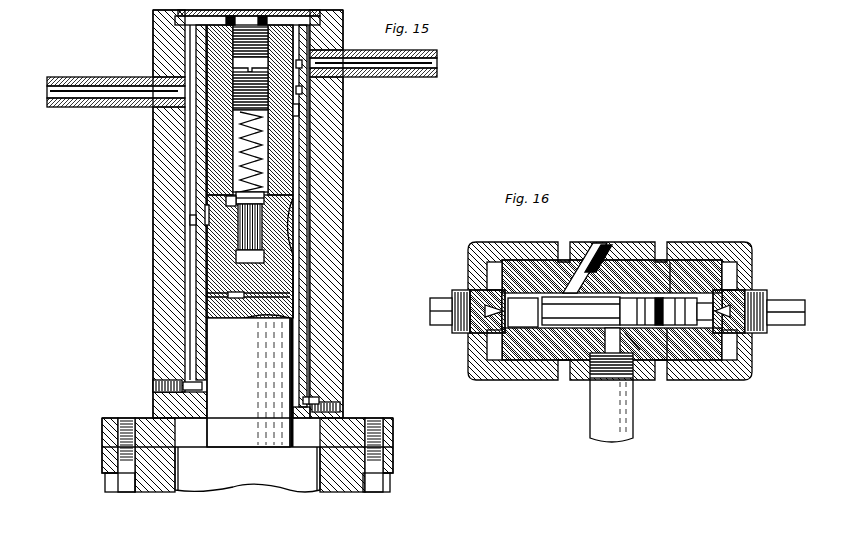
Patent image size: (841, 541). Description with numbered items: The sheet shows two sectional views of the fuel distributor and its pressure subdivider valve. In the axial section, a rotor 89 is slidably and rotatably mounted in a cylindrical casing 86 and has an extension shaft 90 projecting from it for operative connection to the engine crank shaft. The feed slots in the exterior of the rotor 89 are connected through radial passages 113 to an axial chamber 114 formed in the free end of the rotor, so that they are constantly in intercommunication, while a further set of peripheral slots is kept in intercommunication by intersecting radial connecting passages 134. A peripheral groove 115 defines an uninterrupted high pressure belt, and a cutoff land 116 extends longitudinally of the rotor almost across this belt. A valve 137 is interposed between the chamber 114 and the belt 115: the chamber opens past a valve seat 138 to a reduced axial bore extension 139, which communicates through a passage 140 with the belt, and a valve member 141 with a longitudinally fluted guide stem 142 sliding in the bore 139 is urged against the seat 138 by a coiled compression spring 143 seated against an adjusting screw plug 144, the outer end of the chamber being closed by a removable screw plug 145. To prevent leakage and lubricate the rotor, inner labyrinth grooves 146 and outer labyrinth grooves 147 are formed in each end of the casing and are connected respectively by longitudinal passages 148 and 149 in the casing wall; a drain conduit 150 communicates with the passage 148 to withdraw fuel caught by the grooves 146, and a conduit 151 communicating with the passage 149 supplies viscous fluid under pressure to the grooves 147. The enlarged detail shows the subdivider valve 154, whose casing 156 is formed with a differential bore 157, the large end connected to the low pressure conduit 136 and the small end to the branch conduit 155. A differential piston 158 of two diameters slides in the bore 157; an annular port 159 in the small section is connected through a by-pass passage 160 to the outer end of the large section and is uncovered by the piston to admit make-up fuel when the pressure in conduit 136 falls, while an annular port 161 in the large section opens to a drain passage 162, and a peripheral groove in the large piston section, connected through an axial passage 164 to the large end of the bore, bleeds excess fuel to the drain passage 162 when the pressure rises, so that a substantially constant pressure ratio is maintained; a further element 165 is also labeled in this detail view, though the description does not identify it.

In FIG. 15, the radial passages 113 is at (215, 172).
In FIG. 15, the removable screw plug 145 is at (238, 42).
In FIG. 15, the outer labyrinth grooves 147 is at (200, 62).
In FIG. 15, the drain conduit 150 is at (90, 77).
In FIG. 15, the conduit 151 is at (418, 77).
In FIG. 15, the inner labyrinth grooves 146 is at (300, 88).
In FIG. 15, the adjusting screw plug 144 is at (300, 110).
In FIG. 15, the coiled compression spring 143 is at (255, 150).
In FIG. 15, the axial chamber 114 is at (268, 160).
In FIG. 15, the valve 137 is at (232, 205).
In FIG. 15, the high pressure belt groove 115 is at (203, 218).
In FIG. 15, the cutoff land 116 is at (196, 225).
In FIG. 15, the fluted guide stem 142 is at (248, 230).
In FIG. 15, the valve seat 138 is at (264, 200).
In FIG. 15, the valve member 141 is at (262, 213).
In FIG. 15, the reduced axial bore extension 139 is at (270, 232).
In FIG. 15, the longitudinal passage 148 is at (190, 267).
In FIG. 15, the radial connecting passages 134 is at (207, 283).
In FIG. 15, the passage 140 is at (296, 265).
In FIG. 15, the longitudinal passage 149 is at (306, 305).
In FIG. 15, the cylindrical casing 86 is at (330, 325).
In FIG. 15, the rotor 89 is at (242, 366).
In FIG. 15, the extension shaft 90 is at (233, 488).
In FIG. 16, the subdivider valve 154 is at (641, 239).
In FIG. 16, the annular port 159 is at (612, 310).
In FIG. 16, the by-pass passage 160 is at (572, 262).
In FIG. 16, the annular port 161 is at (670, 262).
In FIG. 16, the differential piston 158 is at (592, 292).
In FIG. 16, the differential bore 157 is at (536, 321).
In FIG. 16, the valve plunger 165 is at (637, 285).
In FIG. 16, the branch conduit 155 is at (452, 320).
In FIG. 16, the low pressure fluid conduit 136 is at (788, 302).
In FIG. 16, the casing 156 is at (563, 376).
In FIG. 16, the drain passage 162 is at (640, 377).
In FIG. 16, the axial passage 164 is at (679, 344).